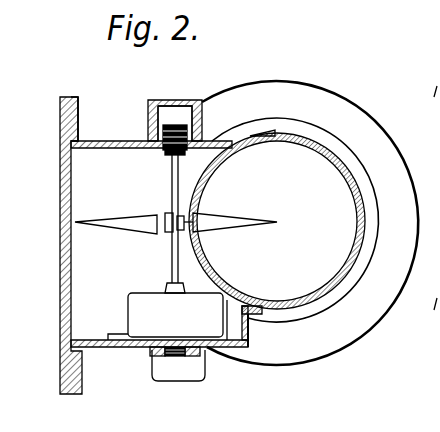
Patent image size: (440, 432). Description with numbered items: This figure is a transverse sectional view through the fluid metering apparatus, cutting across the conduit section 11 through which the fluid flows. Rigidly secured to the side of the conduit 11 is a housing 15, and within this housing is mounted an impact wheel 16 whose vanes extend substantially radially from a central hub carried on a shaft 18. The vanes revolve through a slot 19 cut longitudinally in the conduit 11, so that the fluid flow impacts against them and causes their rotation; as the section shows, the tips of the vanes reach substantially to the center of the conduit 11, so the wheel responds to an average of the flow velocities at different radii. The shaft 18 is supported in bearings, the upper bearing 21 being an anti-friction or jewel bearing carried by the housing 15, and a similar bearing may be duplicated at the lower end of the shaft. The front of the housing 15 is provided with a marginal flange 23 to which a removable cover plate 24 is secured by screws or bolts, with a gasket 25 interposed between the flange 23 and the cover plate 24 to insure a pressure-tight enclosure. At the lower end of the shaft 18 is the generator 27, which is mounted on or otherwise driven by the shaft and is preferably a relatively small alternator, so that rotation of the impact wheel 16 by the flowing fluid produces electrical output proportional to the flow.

The conduit section 11 is at (328, 156).
The housing 15 is at (108, 141).
The impact wheel 16 is at (168, 213).
The shaft 18 is at (172, 263).
The slot 19 is at (200, 228).
The upper bearing 21 is at (166, 150).
The marginal flange 23 is at (79, 100).
The cover plate 24 is at (72, 122).
The gasket 25 is at (76, 97).
The generator 27 is at (140, 302).